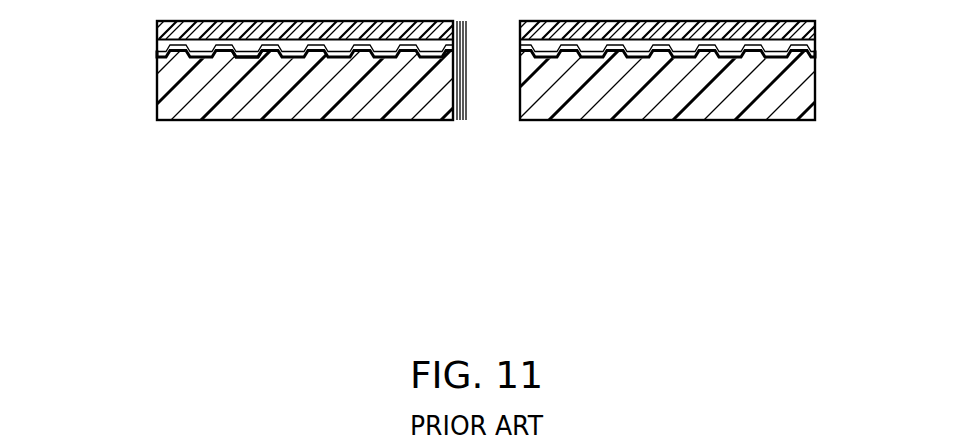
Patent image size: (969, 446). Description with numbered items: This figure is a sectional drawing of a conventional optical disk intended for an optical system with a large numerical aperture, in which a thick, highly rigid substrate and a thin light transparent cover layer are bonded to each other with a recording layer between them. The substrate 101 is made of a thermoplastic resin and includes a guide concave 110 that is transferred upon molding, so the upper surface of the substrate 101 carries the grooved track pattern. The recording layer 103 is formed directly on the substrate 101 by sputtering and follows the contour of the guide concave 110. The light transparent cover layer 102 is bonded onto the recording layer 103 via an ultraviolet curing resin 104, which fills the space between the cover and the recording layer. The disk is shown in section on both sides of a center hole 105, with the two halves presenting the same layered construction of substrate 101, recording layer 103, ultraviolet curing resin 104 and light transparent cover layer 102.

The substrate 101 is at (185, 96).
The light transparent cover layer 102 is at (232, 33).
The recording layer 103 is at (294, 52).
The ultraviolet curing resin 104 is at (640, 47).
The center hole 105 is at (463, 87).
The guide concave 110 is at (242, 53).